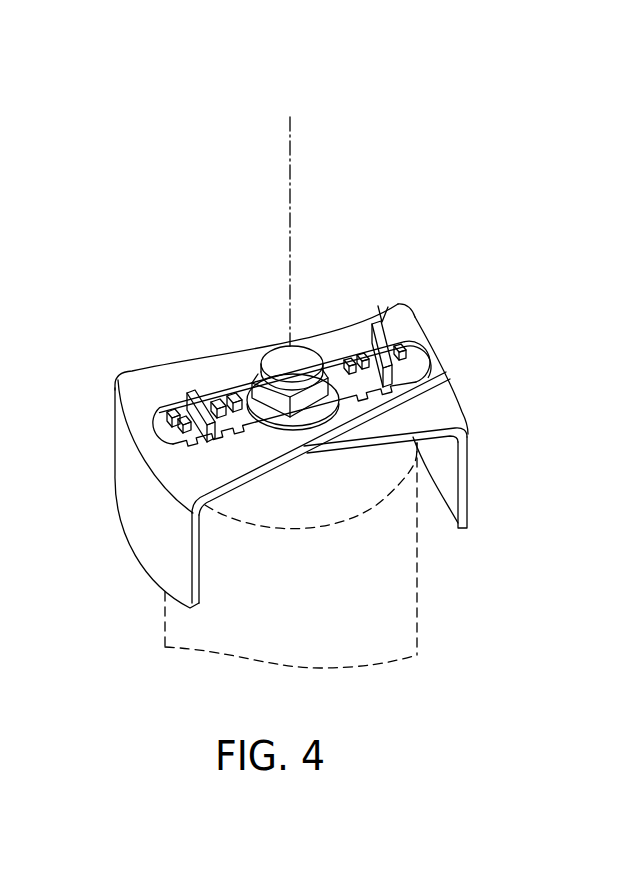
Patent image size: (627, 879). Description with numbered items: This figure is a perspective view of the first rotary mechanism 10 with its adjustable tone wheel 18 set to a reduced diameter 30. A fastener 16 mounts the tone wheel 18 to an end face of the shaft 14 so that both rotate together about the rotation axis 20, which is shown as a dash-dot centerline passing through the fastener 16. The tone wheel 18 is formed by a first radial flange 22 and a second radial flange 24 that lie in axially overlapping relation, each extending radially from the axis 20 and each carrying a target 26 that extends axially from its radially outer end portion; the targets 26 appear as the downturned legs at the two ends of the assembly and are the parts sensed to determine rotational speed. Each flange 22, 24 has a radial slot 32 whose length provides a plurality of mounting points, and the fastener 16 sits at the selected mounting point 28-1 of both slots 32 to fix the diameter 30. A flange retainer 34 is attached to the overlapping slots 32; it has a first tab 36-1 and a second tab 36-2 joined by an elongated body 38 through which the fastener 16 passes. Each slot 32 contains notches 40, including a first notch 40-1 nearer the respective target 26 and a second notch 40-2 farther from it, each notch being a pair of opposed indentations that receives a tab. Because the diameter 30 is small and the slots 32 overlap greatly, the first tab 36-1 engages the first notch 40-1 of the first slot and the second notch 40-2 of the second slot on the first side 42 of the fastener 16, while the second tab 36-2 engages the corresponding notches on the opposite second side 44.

The first rotary mechanism 10 is at (463, 205).
The shaft 14 is at (417, 613).
The fastener 16 is at (268, 347).
The adjustable tone wheel 18 is at (177, 267).
The rotation axis 20 is at (292, 137).
The first radial flange 22 is at (138, 392).
The second radial flange 24 is at (398, 321).
The target 26 is at (178, 575).
The selected mounting point 28-1 is at (303, 448).
The diameter 30 is at (433, 351).
The radial slot 32 is at (185, 436).
The flange retainer 34 is at (386, 310).
The first tab 36-1 is at (193, 389).
The second tab 36-2 is at (378, 322).
The elongated body 38 is at (243, 418).
The notch 40 is at (226, 396).
The first notch 40-1 is at (187, 392).
The second notch 40-2 is at (170, 419).
The first side 42 is at (223, 467).
The second side 44 is at (423, 413).